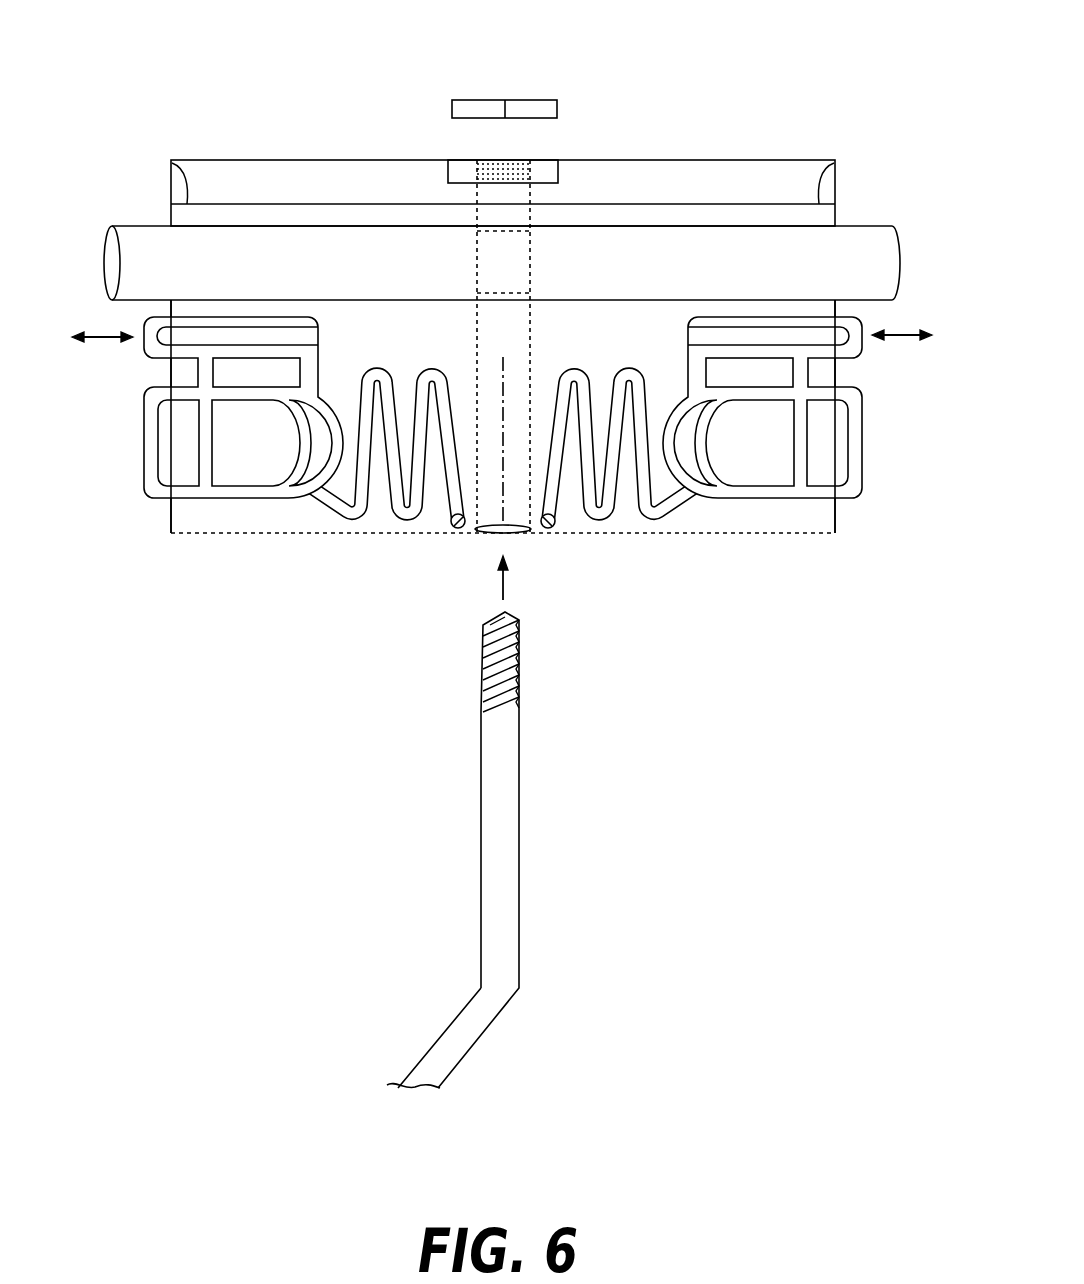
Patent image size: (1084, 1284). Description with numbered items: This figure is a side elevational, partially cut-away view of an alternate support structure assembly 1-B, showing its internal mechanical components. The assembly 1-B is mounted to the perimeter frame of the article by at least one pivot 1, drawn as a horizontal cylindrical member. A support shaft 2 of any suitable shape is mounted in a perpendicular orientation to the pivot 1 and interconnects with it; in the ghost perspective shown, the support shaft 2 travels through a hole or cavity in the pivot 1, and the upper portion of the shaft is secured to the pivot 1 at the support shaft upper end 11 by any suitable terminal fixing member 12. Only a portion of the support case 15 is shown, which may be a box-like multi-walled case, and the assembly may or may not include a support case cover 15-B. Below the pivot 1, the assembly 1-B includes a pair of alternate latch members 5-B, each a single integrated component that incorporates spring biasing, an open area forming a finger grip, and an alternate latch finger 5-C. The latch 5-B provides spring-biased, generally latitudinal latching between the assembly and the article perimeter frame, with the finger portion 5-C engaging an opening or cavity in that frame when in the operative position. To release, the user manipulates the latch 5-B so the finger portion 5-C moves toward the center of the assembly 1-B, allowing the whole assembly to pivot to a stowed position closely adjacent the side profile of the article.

The pivot 1 is at (138, 237).
The alternate support structure assembly 1-B is at (331, 138).
The support shaft 2 is at (520, 662).
The alternate latch and grip 5-B is at (410, 520).
The alternate latch finger 5-C is at (148, 483).
The support shaft upper end 11 is at (546, 168).
The terminal fixing member 12 is at (483, 108).
The support case 15 is at (230, 217).
The support case cover 15-B is at (815, 172).